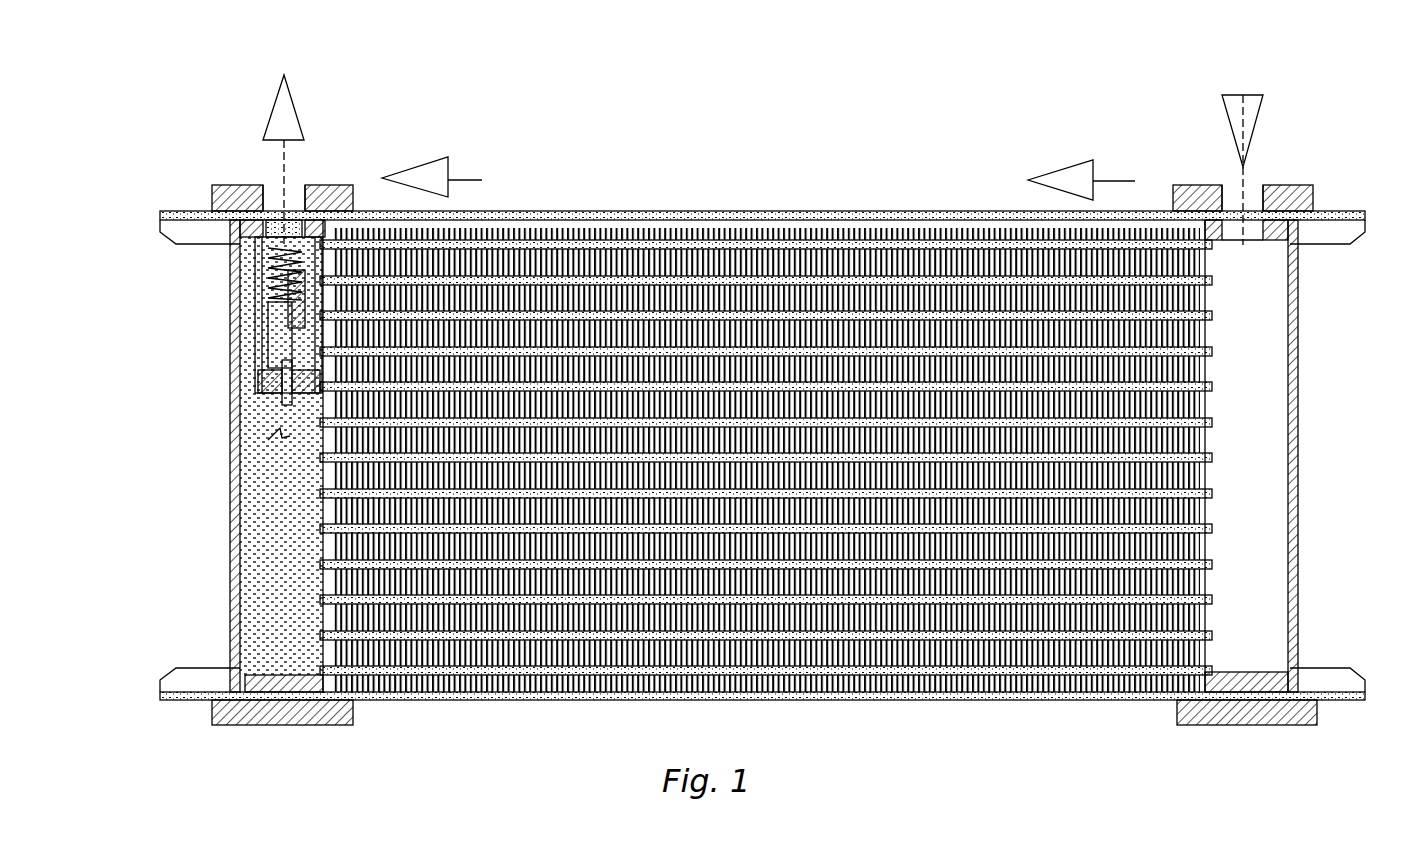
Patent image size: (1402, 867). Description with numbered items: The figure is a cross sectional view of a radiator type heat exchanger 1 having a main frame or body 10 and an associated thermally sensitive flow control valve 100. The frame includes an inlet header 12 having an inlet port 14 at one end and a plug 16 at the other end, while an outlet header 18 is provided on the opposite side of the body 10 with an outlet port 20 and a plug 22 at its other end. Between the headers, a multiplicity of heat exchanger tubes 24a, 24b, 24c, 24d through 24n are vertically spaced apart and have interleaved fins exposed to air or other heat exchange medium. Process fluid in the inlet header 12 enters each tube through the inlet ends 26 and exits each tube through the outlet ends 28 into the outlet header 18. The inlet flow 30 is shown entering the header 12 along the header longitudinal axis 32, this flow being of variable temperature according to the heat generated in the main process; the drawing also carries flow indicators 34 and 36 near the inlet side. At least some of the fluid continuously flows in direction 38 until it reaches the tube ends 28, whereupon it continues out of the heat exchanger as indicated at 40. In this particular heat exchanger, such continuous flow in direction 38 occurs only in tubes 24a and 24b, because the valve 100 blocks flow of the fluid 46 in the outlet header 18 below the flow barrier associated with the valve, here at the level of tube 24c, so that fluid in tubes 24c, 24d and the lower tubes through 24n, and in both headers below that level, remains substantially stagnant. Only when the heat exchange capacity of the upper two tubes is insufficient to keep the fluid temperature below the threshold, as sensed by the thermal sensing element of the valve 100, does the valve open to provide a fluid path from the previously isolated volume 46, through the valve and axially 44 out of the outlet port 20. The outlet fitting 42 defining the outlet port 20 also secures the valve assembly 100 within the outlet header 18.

The heat exchanger 1 is at (710, 109).
The main frame or body 10 is at (792, 395).
The inlet header 12 is at (1300, 462).
The inlet port 14 is at (1258, 188).
The plug 16 is at (1262, 733).
The outlet header 18 is at (226, 522).
The outlet port 20 is at (300, 188).
The plug 22 is at (268, 727).
The heat exchanger tube 24a is at (1208, 251).
The heat exchanger tube 24b is at (1209, 285).
The heat exchanger tube 24c is at (1209, 319).
The heat exchanger tube 24d is at (1209, 351).
The heat exchanger tube 24n is at (1213, 663).
The inlet ends 26 is at (1208, 420).
The outlet ends 28 is at (268, 440).
The inlet flow 30 is at (1243, 95).
The header longitudinal axis 32 is at (1233, 192).
The mounting flange 34 is at (1316, 197).
The inlet flow indicator 36 is at (1098, 178).
The flow direction 38 is at (452, 178).
The outlet flow 40 is at (290, 152).
The outlet fitting 42 is at (206, 196).
The axial flow path 44 is at (283, 212).
The fluid 46 is at (280, 545).
The flow control valve 100 is at (252, 321).